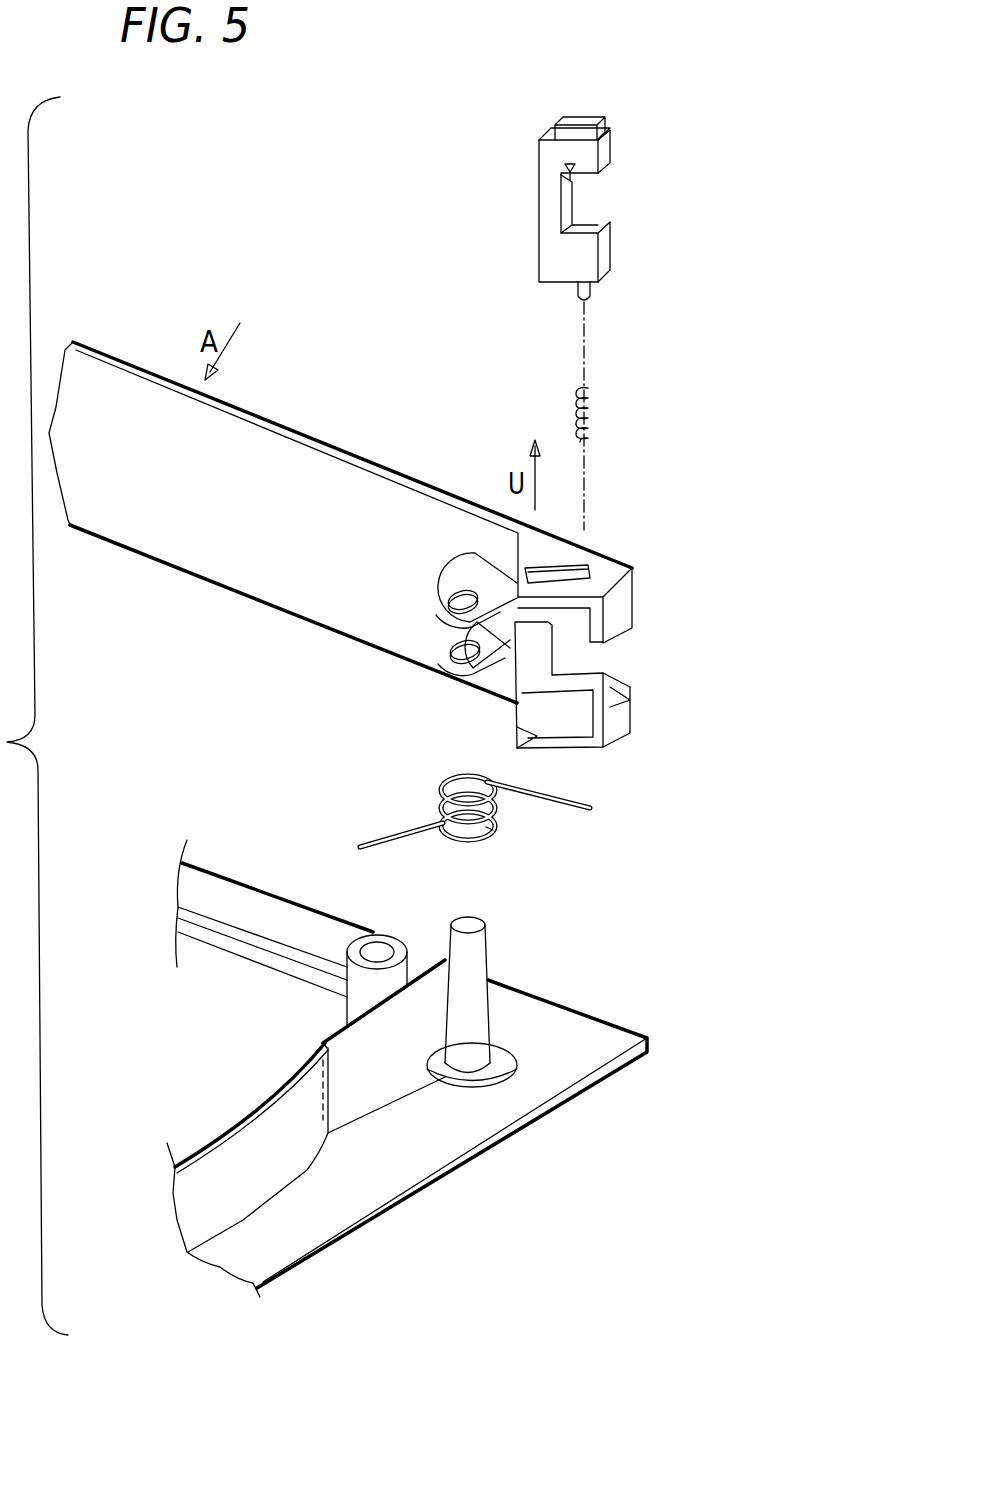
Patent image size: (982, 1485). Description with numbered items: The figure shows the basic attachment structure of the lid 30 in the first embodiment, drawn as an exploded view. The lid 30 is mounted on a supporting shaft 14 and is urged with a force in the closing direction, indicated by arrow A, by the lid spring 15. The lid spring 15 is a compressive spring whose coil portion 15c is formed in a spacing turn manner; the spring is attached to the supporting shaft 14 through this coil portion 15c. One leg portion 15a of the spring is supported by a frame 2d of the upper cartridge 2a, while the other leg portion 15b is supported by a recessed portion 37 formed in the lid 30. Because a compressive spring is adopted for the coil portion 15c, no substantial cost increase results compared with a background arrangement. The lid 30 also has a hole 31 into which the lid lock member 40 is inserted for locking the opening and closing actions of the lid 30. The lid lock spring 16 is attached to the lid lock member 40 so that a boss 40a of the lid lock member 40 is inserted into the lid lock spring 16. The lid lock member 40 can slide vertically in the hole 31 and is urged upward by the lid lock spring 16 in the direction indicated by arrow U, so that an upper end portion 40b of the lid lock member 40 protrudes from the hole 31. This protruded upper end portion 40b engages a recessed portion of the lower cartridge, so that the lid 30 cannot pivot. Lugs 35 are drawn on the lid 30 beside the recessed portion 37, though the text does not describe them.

The upper cartridge 2a is at (435, 1127).
The frame 2d is at (277, 1163).
The supporting shaft 14 is at (468, 975).
The lid spring 15 is at (438, 772).
The leg portion 15a is at (400, 832).
The leg portion 15b is at (567, 803).
The coil portion 15c is at (493, 830).
The lid lock spring 16 is at (582, 412).
The lid 30 is at (315, 490).
The hole 31 is at (563, 567).
The pivot lugs 35 is at (433, 583).
The recessed portion 37 is at (580, 708).
The lid lock member 40 is at (539, 200).
The boss 40a is at (590, 300).
The upper end portion 40b is at (600, 127).